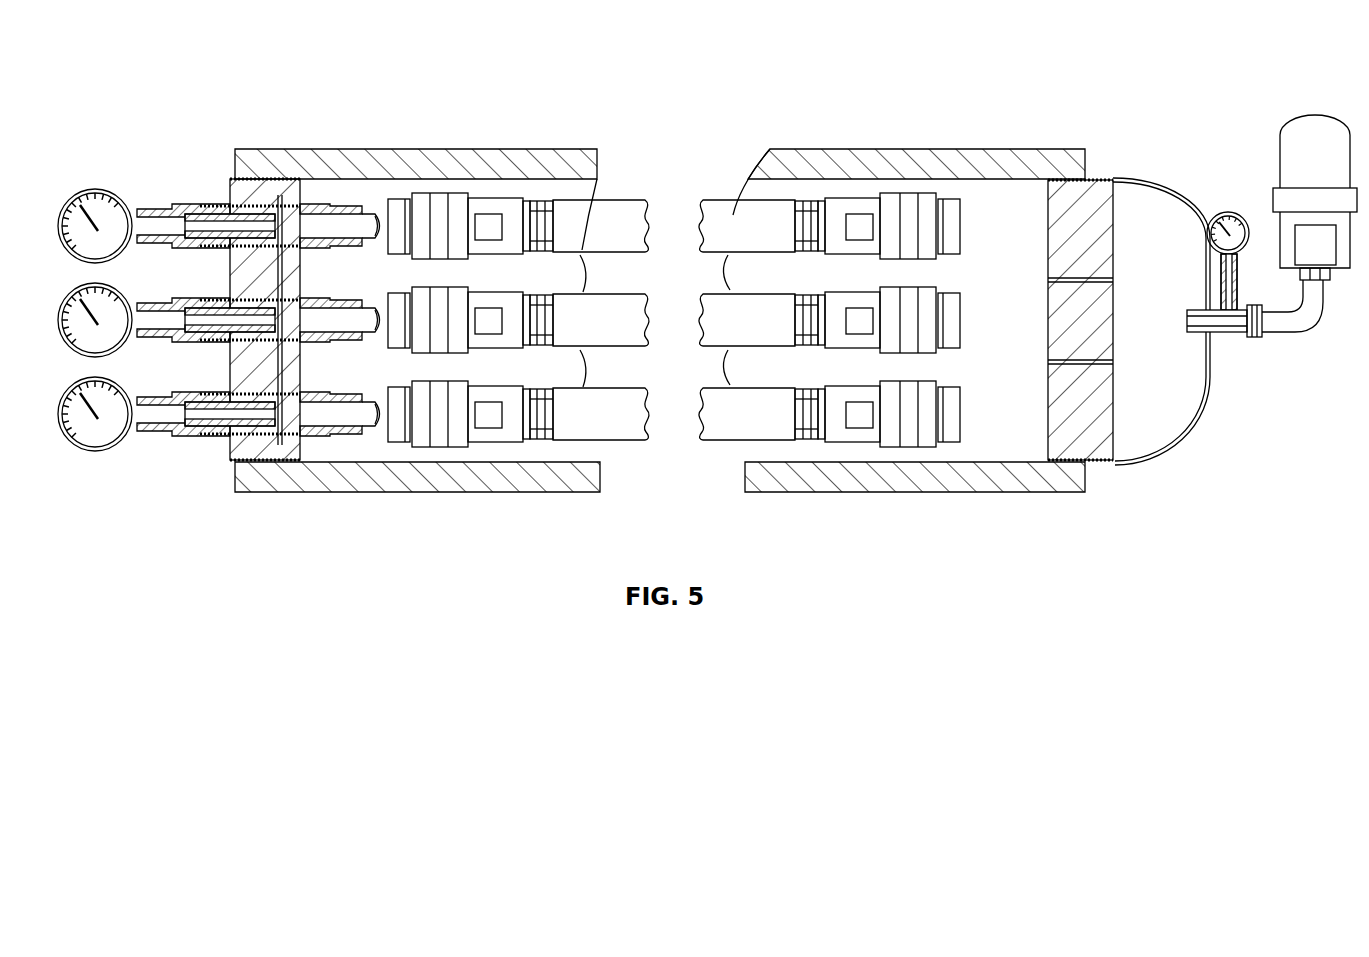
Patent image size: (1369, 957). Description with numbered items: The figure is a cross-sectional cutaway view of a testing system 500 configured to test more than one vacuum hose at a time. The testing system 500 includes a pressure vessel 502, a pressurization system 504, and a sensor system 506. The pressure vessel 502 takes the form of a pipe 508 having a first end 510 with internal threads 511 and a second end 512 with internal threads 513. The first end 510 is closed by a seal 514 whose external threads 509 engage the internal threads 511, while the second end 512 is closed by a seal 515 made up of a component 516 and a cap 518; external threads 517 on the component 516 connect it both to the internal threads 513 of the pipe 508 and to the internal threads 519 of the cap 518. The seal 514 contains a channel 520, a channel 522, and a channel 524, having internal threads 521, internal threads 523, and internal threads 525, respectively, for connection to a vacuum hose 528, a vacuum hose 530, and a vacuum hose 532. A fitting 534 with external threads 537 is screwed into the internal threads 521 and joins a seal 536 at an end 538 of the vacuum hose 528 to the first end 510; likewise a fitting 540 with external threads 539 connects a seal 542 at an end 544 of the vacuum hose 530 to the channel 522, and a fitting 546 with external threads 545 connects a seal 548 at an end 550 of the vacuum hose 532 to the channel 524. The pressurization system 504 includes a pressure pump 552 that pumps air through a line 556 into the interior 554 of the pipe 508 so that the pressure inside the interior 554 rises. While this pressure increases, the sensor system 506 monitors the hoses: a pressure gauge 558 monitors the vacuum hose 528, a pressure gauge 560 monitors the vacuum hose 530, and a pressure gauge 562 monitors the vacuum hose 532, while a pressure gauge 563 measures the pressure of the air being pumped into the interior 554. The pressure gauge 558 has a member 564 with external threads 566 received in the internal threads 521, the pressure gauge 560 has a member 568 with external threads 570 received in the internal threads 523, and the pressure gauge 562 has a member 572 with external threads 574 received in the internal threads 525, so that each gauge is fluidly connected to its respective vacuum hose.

The testing system 500 is at (853, 93).
The pressure vessel 502 is at (758, 151).
The pressurization system 504 is at (1272, 182).
The sensor system 506 is at (87, 459).
The pipe 508 is at (893, 149).
The external threads 509 is at (247, 190).
The first end 510 is at (233, 126).
The internal threads 511 is at (333, 178).
The second end 512 is at (1071, 146).
The internal threads 513 is at (1061, 197).
The seal 514 is at (228, 191).
The seal 515 is at (1138, 471).
The component 516 is at (1106, 248).
The external threads 517 is at (1049, 449).
The cap 518 is at (1178, 446).
The internal threads 519 is at (1104, 458).
The channel 520 is at (318, 205).
The internal threads 521 is at (276, 278).
The channel 522 is at (306, 250).
The internal threads 523 is at (304, 362).
The channel 524 is at (258, 436).
The internal threads 525 is at (226, 432).
The vacuum hose 528 is at (612, 202).
The vacuum hose 530 is at (629, 293).
The vacuum hose 532 is at (625, 447).
The fitting 534 is at (350, 192).
The seal 536 is at (487, 191).
The external threads 537 is at (385, 246).
The end 538 is at (536, 191).
The external threads 539 is at (385, 340).
The fitting 540 is at (362, 288).
The seal 542 is at (509, 359).
The end 544 is at (538, 286).
The external threads 545 is at (379, 420).
The fitting 546 is at (346, 444).
The seal 548 is at (507, 456).
The end 550 is at (553, 454).
The pressure pump 552 is at (1268, 153).
The interior 554 is at (1003, 323).
The line 556 is at (1283, 338).
The pressure gauge 558 is at (84, 190).
The pressure gauge 560 is at (73, 284).
The pressure gauge 562 is at (86, 452).
The pressure gauge 563 is at (1232, 212).
The member 564 is at (190, 205).
The external threads 566 is at (228, 253).
The member 568 is at (190, 340).
The external threads 570 is at (216, 354).
The member 572 is at (180, 440).
The external threads 574 is at (236, 448).